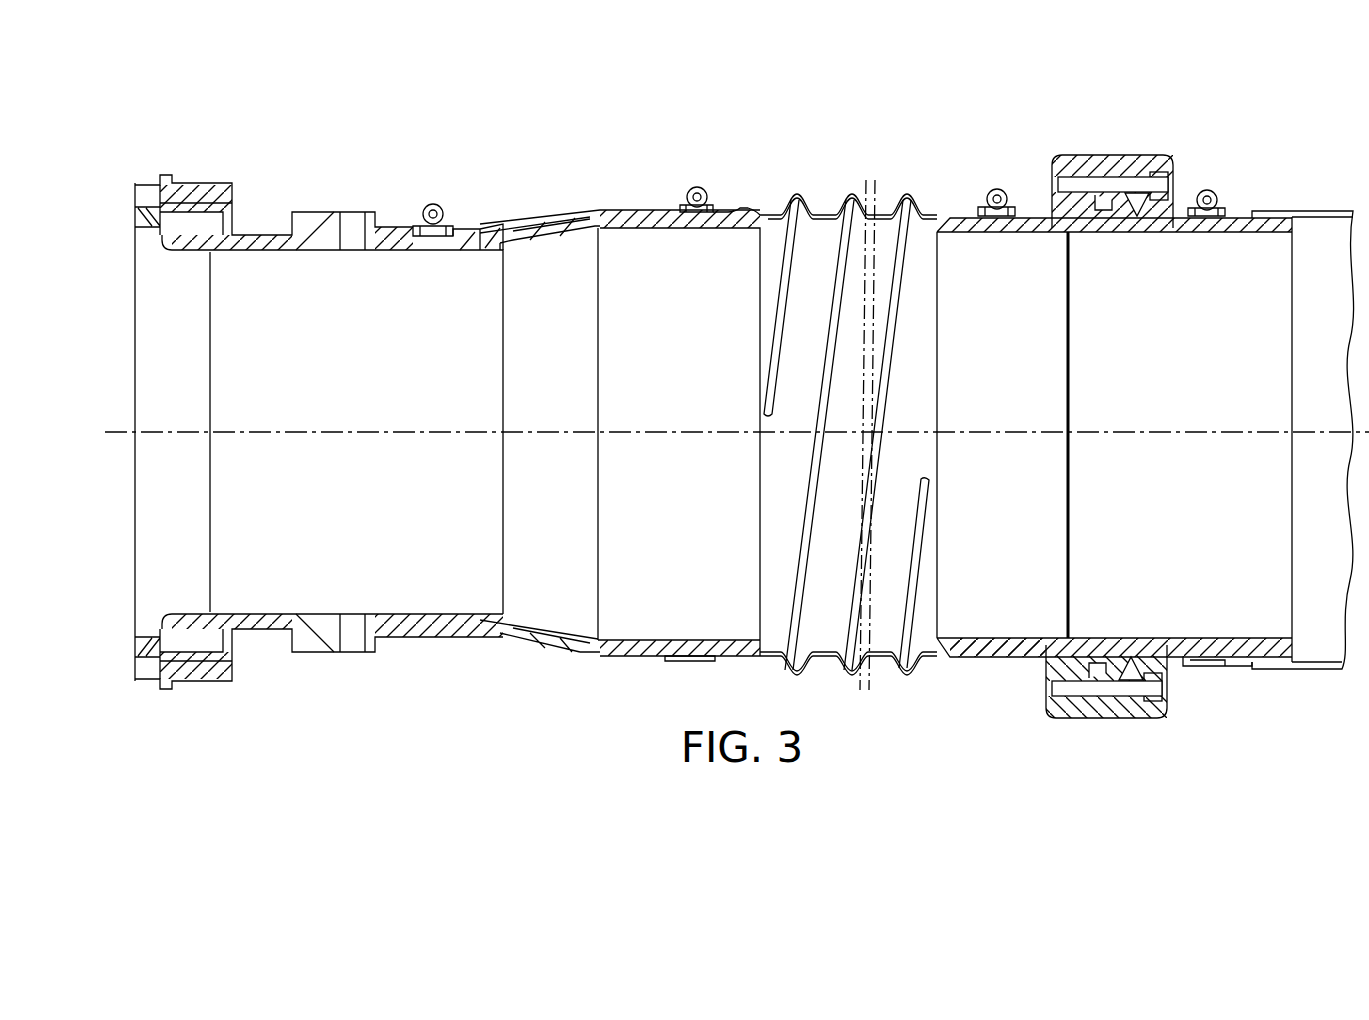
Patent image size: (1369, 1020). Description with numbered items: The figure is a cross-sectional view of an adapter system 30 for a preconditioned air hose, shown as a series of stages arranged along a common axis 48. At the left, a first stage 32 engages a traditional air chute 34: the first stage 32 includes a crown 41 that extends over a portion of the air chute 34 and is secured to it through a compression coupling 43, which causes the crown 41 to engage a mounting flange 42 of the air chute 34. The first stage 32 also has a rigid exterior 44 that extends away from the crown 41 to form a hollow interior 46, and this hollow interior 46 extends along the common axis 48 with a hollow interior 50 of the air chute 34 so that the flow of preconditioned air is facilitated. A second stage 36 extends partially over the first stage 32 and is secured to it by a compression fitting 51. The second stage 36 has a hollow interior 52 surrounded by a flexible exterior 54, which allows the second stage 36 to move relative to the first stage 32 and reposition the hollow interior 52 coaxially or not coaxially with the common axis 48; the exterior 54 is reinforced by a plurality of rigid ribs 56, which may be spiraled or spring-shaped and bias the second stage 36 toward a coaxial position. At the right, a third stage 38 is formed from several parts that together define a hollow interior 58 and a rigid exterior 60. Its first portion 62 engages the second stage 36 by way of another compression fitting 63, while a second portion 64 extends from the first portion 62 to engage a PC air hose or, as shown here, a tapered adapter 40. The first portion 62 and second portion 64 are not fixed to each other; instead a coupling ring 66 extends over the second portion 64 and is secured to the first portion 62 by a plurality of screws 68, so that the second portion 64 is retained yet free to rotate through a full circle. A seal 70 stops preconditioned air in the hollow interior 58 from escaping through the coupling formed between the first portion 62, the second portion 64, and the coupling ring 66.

The adapter system 30 is at (1251, 82).
The first stage 32 is at (612, 163).
The air chute 34 is at (336, 172).
The second stage 36 is at (863, 140).
The third stage 38 is at (1192, 148).
The tapered adapter 40 is at (1305, 672).
The crown 41 is at (462, 229).
The mounting flange 42 is at (388, 620).
The compression coupling 43 is at (433, 203).
The rigid exterior 44 is at (661, 210).
The hollow interior 46 is at (641, 610).
The common axis 48 is at (318, 437).
The hollow interior 50 is at (267, 580).
The compression fitting 51 is at (712, 201).
The hollow interior 52 is at (873, 648).
The flexible exterior 54 is at (880, 210).
The rigid ribs 56 is at (835, 232).
The hollow interior 58 is at (1262, 528).
The rigid exterior 60 is at (1196, 712).
The first portion 62 is at (1018, 670).
The compression fitting 63 is at (990, 190).
The second portion 64 is at (1221, 640).
The coupling ring 66 is at (1128, 165).
The screws 68 is at (1102, 178).
The seal 70 is at (1195, 202).